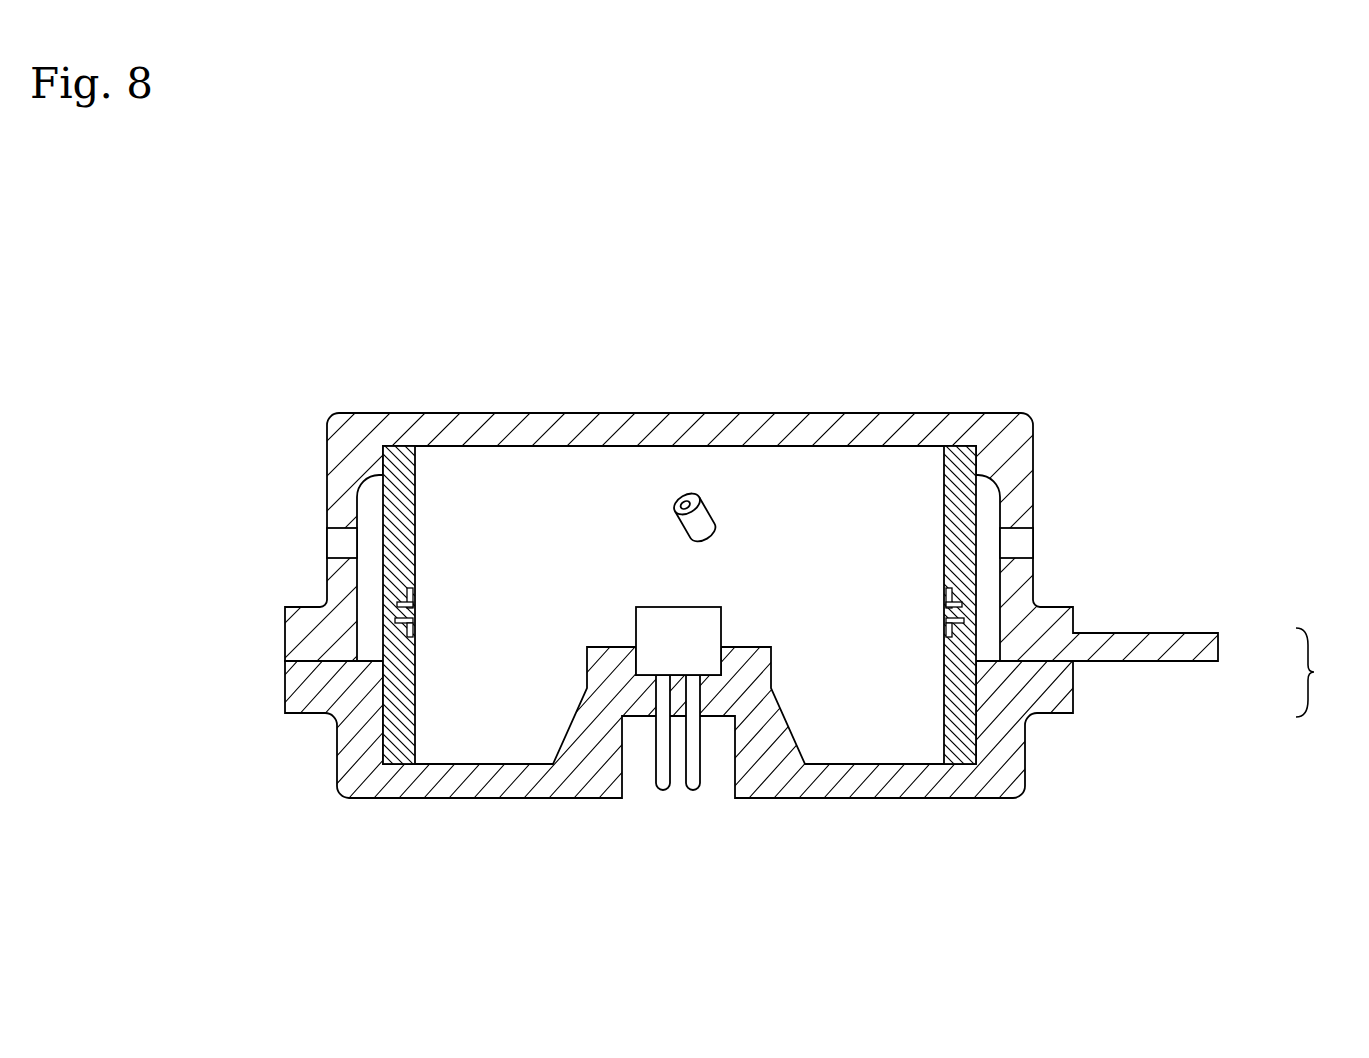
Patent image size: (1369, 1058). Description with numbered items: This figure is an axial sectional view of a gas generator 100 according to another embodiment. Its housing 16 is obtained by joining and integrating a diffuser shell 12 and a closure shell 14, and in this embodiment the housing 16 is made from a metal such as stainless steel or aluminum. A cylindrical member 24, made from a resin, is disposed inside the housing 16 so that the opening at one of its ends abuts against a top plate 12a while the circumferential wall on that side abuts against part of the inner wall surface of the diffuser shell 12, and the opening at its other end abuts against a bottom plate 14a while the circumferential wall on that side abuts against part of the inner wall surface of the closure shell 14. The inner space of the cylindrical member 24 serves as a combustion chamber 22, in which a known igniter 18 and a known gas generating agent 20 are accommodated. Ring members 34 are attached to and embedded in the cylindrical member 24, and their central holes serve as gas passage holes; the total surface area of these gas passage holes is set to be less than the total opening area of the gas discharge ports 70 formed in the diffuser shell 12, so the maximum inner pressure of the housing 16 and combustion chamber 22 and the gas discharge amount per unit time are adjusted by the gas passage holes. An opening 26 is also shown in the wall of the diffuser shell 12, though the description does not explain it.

The gas generator 100 is at (855, 373).
The diffuser shell 12 is at (1206, 648).
The top plate 12a is at (596, 450).
The closure shell 14 is at (1065, 695).
The bottom plate 14a is at (447, 764).
The housing 16 is at (1325, 672).
The igniter 18 is at (696, 657).
The gas generating agent 20 is at (703, 515).
The combustion chamber 22 is at (890, 567).
The cylindrical member 24 is at (397, 498).
The opening 26 is at (375, 505).
The ring member 34 is at (413, 596).
The gas discharge port 70 is at (1022, 540).